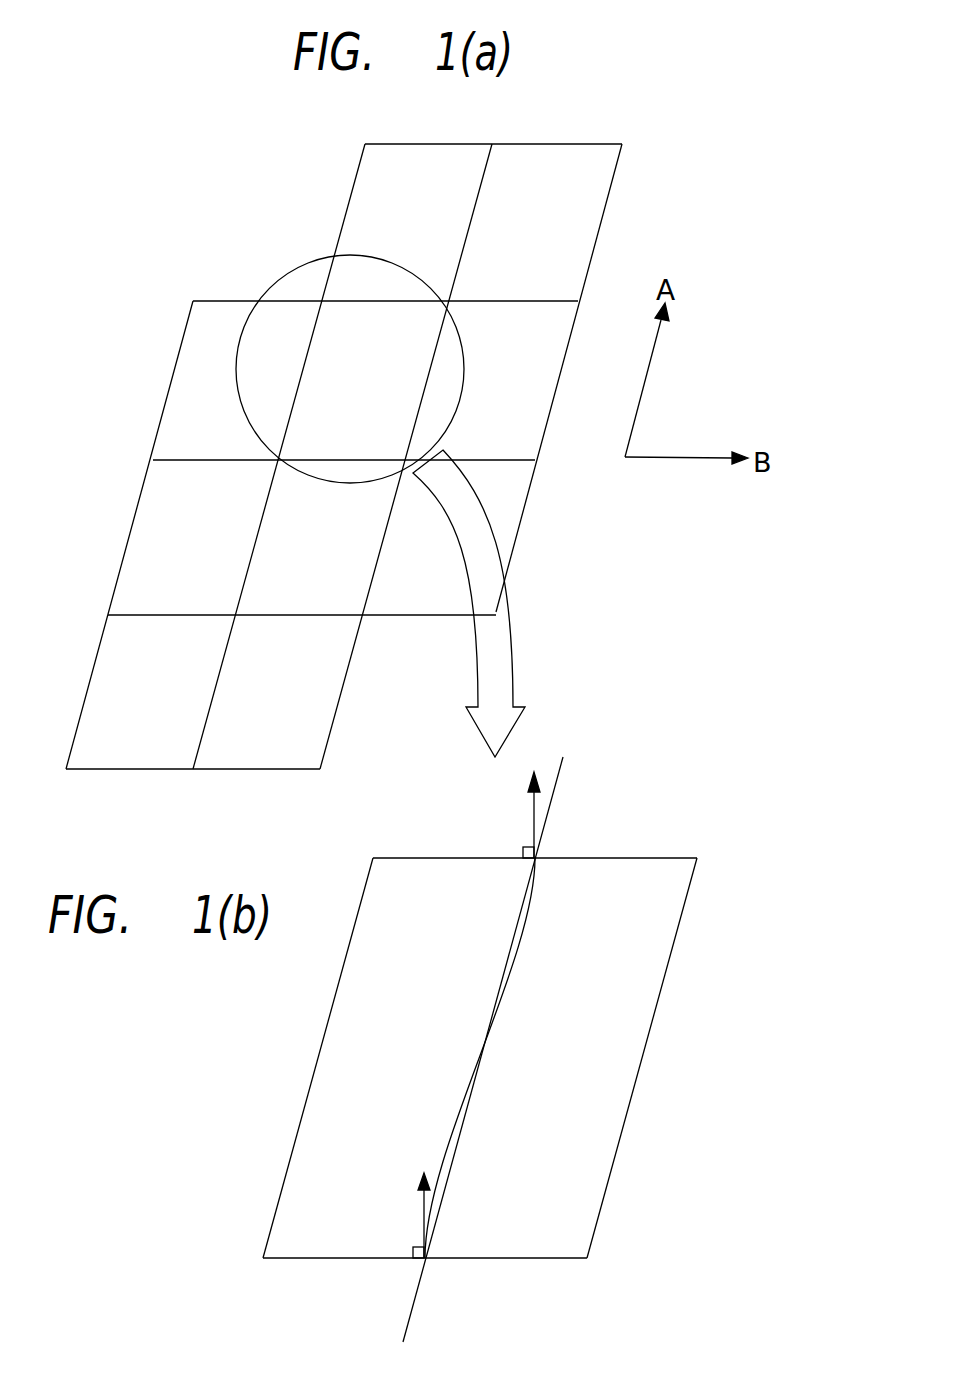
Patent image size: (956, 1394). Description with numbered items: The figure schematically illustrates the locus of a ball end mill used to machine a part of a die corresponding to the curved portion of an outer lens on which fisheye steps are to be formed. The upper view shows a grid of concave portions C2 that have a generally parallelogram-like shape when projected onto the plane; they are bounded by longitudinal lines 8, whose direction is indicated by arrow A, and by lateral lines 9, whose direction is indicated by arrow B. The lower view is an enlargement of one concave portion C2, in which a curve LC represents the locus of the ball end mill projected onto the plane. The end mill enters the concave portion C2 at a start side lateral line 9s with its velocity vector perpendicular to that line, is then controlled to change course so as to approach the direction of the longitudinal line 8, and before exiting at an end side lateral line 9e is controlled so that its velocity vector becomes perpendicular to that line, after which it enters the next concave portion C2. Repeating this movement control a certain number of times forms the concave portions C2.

In FIG. 1A, the longitudinal line 8 is at (135, 513).
In FIG. 1B, the longitudinal line 8 is at (318, 1063).
In FIG. 1A, the lateral line 9 is at (298, 615).
In FIG. 1A, the concave portion C2 is at (357, 327).
In FIG. 1B, the concave portion C2 is at (662, 910).
In FIG. 1B, the end side lateral line 9e is at (605, 858).
In FIG. 1B, the start side lateral line 9s is at (493, 1260).
In FIG. 1B, the locus curve LC is at (508, 997).